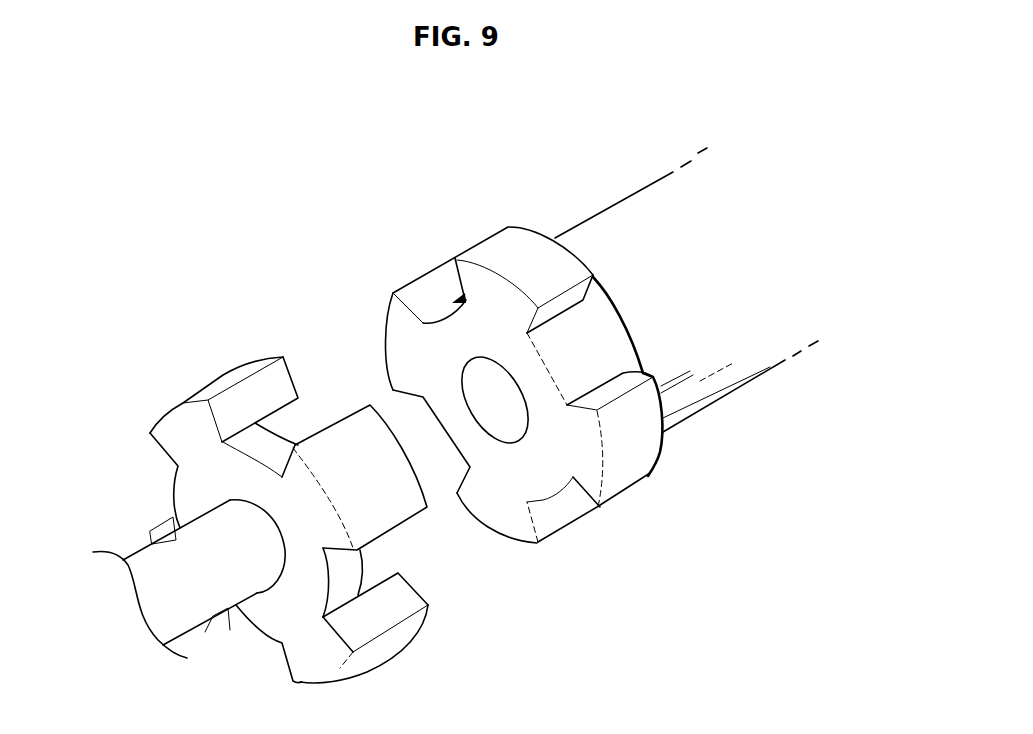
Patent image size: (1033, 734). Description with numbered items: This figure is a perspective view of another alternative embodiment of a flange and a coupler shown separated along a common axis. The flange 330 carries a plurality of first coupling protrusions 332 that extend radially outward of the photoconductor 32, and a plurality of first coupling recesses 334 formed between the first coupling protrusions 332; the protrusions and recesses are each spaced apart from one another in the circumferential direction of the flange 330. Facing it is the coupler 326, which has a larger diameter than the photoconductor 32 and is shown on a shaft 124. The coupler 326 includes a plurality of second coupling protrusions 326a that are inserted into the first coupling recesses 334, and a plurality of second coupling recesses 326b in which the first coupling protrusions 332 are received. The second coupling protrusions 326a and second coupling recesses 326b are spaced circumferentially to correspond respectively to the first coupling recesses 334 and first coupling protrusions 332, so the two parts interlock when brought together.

The photoconductor 32 is at (641, 228).
The shaft 124 is at (233, 588).
The coupler 326 is at (260, 492).
The second coupling protrusions 326a is at (245, 392).
The second coupling recesses 326b is at (292, 418).
The flange 330 is at (563, 354).
The first coupling protrusions 332 is at (496, 254).
The first coupling recesses 334 is at (594, 360).